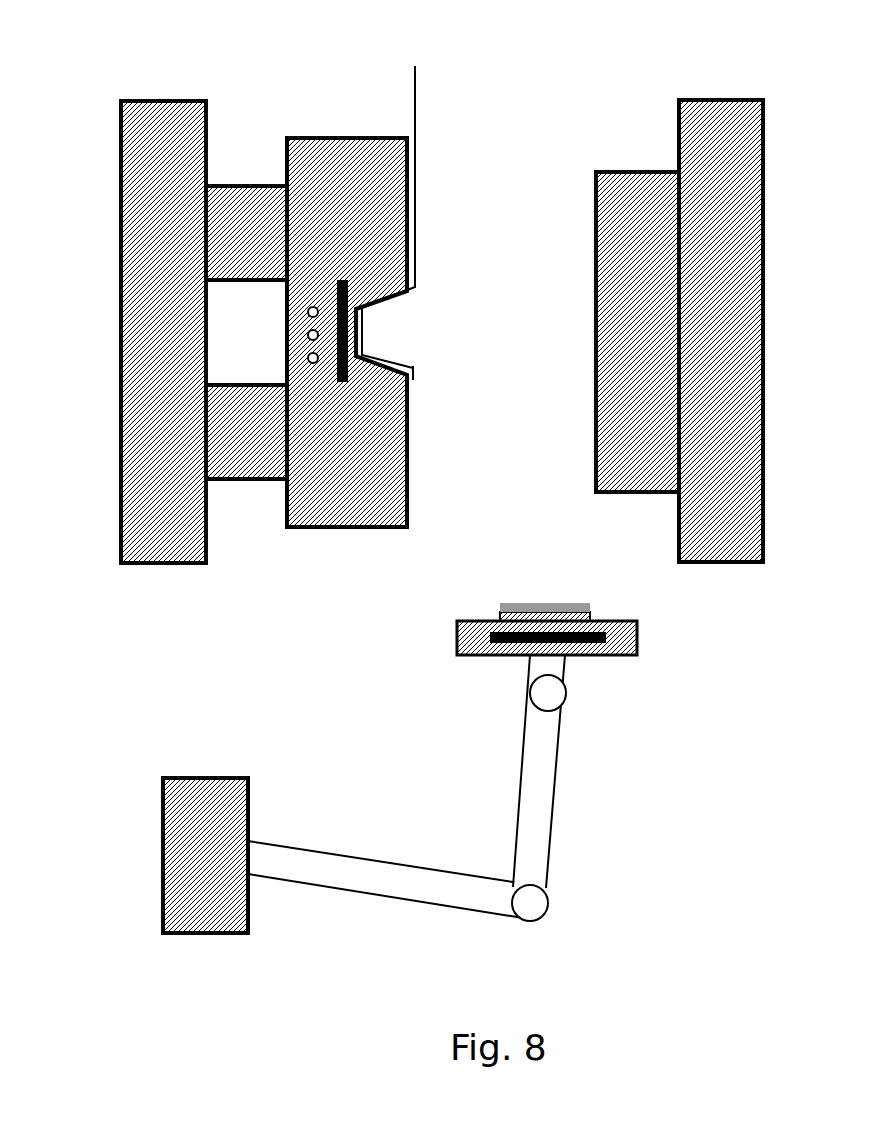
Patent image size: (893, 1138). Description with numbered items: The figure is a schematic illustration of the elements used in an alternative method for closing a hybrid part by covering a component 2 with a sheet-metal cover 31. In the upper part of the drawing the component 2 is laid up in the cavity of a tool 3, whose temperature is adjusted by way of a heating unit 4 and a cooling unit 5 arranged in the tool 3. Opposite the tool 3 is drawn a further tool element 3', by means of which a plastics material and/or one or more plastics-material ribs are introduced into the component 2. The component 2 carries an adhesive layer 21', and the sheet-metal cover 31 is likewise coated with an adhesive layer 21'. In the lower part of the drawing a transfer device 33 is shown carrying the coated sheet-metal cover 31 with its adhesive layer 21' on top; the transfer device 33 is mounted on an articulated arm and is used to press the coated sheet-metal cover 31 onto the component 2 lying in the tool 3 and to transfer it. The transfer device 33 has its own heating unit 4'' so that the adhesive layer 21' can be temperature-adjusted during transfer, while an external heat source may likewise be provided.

The component 2 is at (395, 198).
The tool 3 is at (347, 272).
The element of the tool 3' is at (721, 289).
The heating unit 4 is at (195, 336).
The heating unit 4'' is at (563, 687).
The cooling unit 5 is at (308, 313).
The adhesive layer 21' is at (453, 607).
The sheet-metal cover 31 is at (590, 614).
The transfer device 33 is at (478, 645).